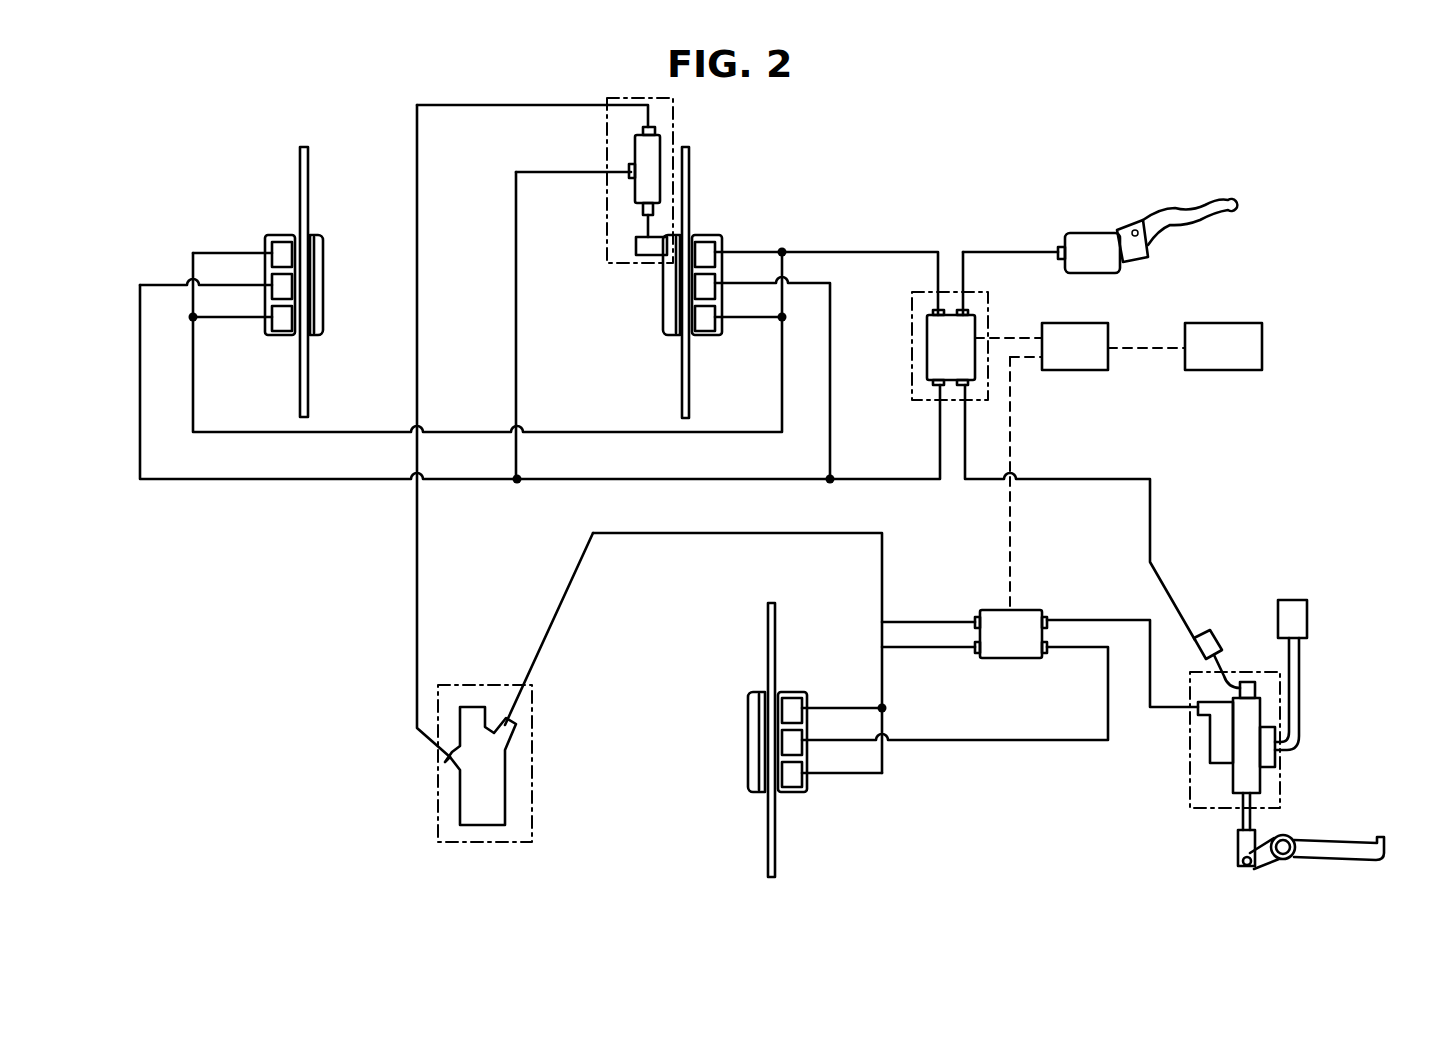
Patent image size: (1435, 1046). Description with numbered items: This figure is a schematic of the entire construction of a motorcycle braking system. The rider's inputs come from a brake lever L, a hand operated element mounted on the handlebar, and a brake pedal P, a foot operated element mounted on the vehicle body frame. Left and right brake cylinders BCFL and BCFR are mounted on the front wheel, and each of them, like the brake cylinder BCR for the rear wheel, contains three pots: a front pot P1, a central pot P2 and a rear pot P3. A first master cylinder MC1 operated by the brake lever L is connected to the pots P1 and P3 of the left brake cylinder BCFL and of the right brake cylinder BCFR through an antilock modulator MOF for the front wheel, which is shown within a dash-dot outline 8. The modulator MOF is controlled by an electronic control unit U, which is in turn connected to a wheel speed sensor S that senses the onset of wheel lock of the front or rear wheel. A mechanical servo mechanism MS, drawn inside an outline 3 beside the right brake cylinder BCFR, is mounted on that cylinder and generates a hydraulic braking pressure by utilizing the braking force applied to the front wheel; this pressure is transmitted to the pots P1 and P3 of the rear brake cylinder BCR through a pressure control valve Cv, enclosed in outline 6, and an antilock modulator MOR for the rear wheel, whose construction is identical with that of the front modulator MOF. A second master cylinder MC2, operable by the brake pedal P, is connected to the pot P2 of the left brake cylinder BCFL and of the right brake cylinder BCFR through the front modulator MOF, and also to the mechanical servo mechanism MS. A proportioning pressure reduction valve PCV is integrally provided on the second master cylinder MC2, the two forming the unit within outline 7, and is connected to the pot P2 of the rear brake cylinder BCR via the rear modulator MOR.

The left brake cylinder BCFL is at (255, 238).
The right brake cylinder BCFR is at (727, 227).
The brake cylinder for the rear wheel BCR is at (744, 690).
The front pot P1 is at (283, 247).
The central pot P2 is at (277, 290).
The rear pot P3 is at (285, 322).
The secondary master cylinder unit 3 is at (615, 237).
The mechanical servo mechanism MS is at (635, 156).
The front modulator unit 8 is at (920, 289).
The antilock modulator for the front wheel MOF is at (930, 362).
The electronic control unit U is at (1086, 366).
The wheel speed sensor S is at (1230, 366).
The first master cylinder MC1 is at (1086, 245).
The brake lever L is at (1176, 207).
The antilock modulator for the rear wheel MOR is at (993, 612).
The control valve unit 6 is at (505, 775).
The pressure control valve Cv is at (470, 790).
The rear master cylinder unit 7 is at (1258, 734).
The proportioning pressure reduction valve PCV is at (1206, 740).
The second master cylinder MC2 is at (1265, 783).
The brake pedal P is at (1386, 833).